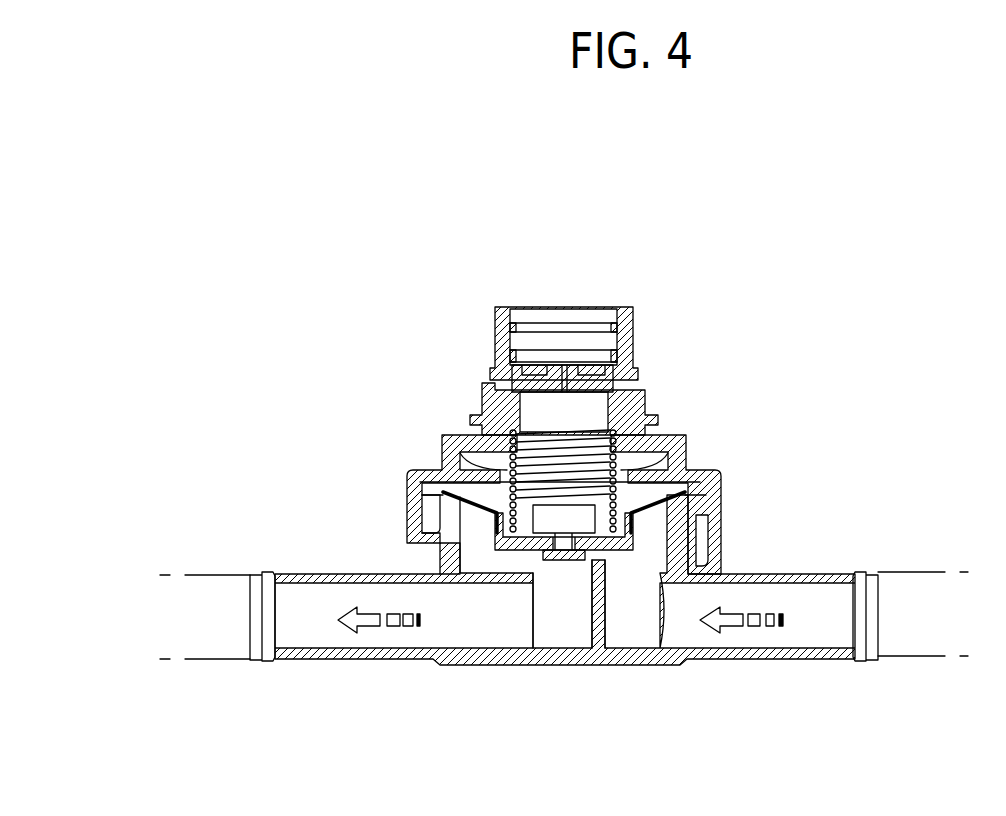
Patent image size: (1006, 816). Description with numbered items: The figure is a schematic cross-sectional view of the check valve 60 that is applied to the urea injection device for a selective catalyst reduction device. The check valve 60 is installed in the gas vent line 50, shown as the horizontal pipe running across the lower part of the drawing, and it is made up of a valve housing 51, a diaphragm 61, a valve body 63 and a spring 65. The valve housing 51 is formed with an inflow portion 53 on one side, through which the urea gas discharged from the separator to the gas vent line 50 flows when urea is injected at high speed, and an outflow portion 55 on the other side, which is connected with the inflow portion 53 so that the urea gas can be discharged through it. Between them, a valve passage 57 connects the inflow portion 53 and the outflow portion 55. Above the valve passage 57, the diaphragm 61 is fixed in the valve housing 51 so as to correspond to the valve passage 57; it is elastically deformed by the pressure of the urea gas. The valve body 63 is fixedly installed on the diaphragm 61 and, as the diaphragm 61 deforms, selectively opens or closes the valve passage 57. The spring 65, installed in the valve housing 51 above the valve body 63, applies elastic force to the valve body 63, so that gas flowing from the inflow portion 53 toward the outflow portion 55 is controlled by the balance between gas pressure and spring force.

The gas vent line 50 is at (905, 570).
The valve housing 51 is at (503, 694).
The inflow portion 53 is at (773, 660).
The outflow portion 55 is at (318, 660).
The valve passage 57 is at (572, 566).
The check valve 60 is at (578, 353).
The diaphragm 61 is at (673, 517).
The valve body 63 is at (617, 470).
The spring 65 is at (507, 469).